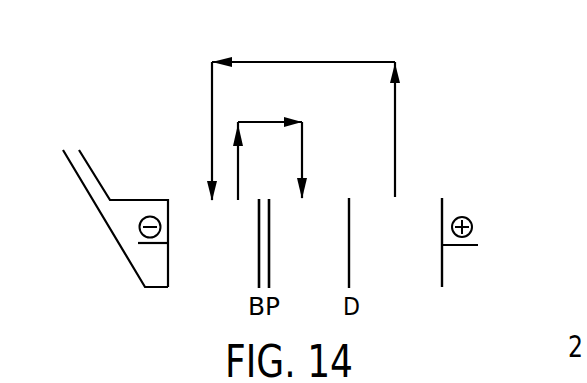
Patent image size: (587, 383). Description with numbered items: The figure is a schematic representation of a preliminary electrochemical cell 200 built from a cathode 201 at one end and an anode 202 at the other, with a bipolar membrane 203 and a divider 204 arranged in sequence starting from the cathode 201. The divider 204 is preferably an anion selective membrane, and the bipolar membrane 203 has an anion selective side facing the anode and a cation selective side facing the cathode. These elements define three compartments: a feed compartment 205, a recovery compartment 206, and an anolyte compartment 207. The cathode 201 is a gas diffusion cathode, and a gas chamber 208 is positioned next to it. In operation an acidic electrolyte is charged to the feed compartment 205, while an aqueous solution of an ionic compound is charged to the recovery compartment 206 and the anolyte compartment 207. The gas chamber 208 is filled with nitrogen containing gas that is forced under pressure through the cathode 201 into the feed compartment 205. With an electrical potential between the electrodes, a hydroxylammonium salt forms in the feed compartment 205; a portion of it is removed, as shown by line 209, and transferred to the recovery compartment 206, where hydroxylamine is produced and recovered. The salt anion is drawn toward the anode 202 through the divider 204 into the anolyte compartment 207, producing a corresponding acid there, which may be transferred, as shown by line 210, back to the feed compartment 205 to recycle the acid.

The preliminary electrochemical cell 200 is at (566, 232).
The cathode 201 is at (160, 203).
The anode 202 is at (447, 227).
The bipolar membrane 203 is at (266, 227).
The divider 204 is at (348, 227).
The feed compartment 205 is at (215, 276).
The recovery compartment 206 is at (309, 276).
The anolyte compartment 207 is at (393, 276).
The gas chamber 208 is at (117, 222).
The line 209 is at (302, 132).
The line 210 is at (370, 62).